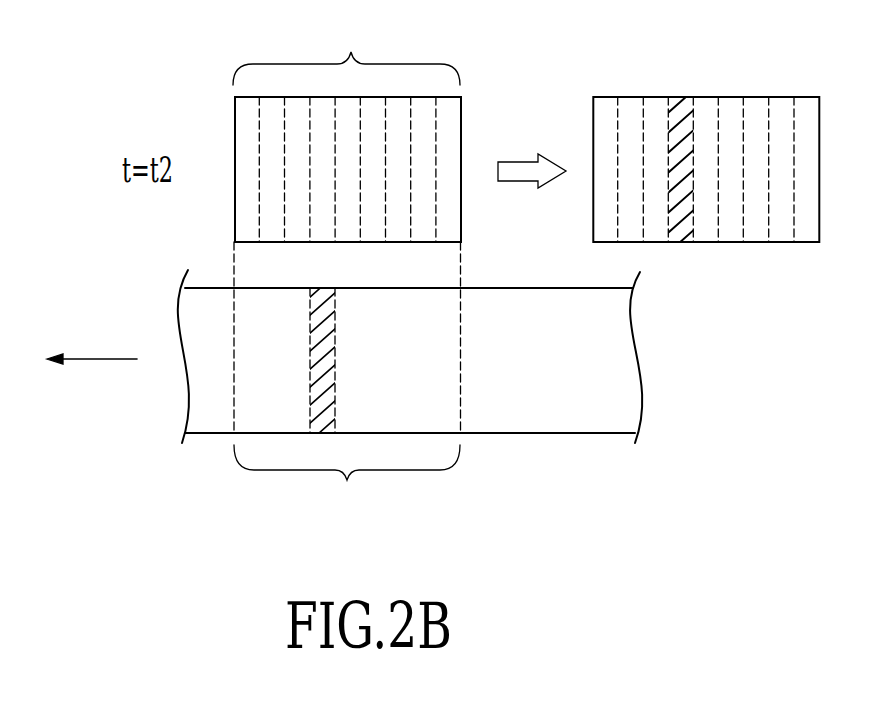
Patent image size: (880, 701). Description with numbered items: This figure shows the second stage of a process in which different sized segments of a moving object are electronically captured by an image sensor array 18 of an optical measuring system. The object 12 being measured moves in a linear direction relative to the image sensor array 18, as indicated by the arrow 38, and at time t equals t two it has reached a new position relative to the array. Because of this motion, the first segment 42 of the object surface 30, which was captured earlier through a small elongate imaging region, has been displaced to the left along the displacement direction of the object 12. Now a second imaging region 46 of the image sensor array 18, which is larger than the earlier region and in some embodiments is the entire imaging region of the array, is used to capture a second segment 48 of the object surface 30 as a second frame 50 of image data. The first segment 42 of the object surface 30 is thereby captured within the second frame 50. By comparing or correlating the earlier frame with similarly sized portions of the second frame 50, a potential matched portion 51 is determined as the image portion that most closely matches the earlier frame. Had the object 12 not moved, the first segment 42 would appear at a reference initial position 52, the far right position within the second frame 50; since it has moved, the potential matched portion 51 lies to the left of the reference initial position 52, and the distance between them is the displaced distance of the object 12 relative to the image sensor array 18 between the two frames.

The image sensor array 18 is at (208, 73).
The second imaging region 46 is at (346, 48).
The second frame 50 is at (755, 73).
The potential matched portion 51 is at (676, 97).
The reference initial position 52 is at (805, 233).
The object 12 is at (503, 287).
The object surface 30 is at (568, 377).
The first segment 42 is at (322, 325).
The arrow 38 is at (93, 361).
The second segment 48 is at (347, 483).